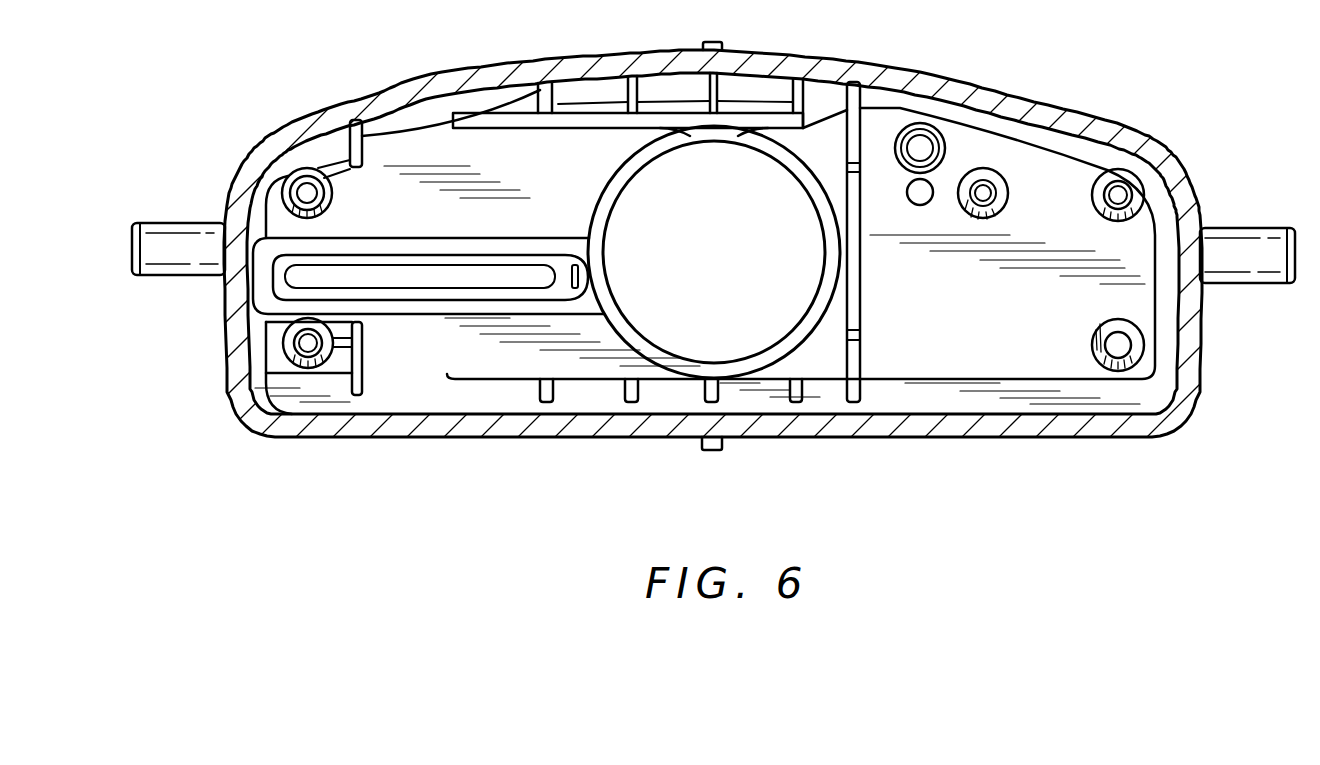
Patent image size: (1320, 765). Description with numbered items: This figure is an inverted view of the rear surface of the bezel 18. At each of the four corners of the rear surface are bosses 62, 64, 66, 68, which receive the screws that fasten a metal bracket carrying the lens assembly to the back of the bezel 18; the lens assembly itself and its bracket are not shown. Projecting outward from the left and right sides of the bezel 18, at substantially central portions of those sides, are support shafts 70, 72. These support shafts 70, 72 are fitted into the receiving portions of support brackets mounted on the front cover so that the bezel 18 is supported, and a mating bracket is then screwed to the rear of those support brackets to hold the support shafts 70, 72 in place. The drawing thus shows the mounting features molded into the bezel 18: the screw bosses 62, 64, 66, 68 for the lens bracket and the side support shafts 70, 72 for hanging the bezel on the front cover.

The bezel 18 is at (990, 78).
The boss 62 is at (311, 164).
The boss 64 is at (304, 368).
The boss 66 is at (1134, 184).
The boss 68 is at (1127, 369).
The support shaft 70 is at (134, 276).
The support shaft 72 is at (1268, 224).